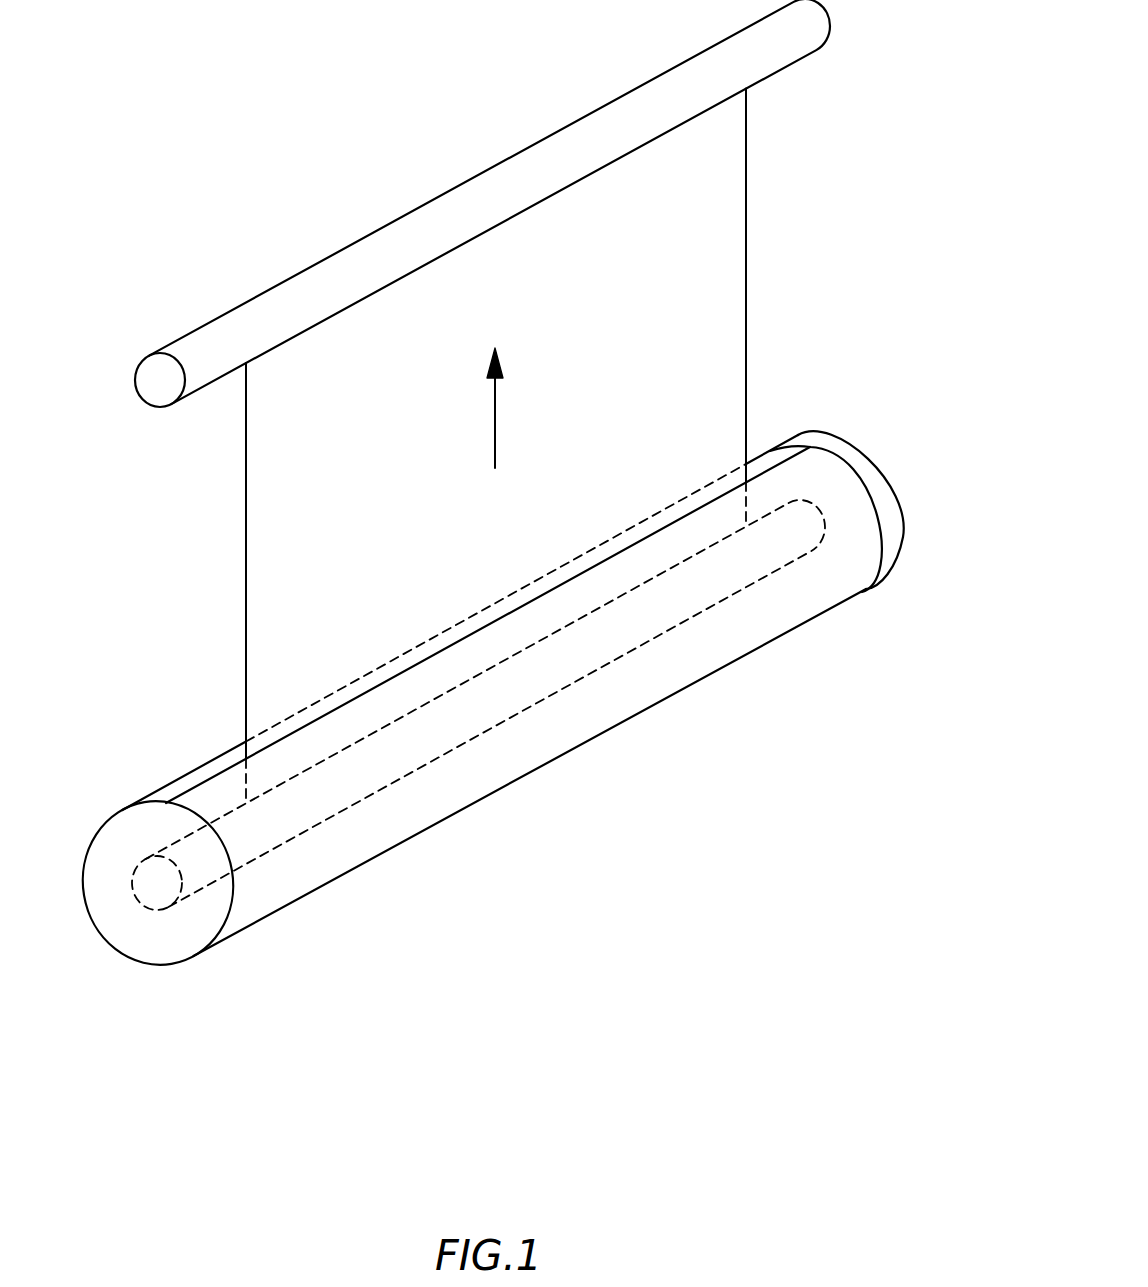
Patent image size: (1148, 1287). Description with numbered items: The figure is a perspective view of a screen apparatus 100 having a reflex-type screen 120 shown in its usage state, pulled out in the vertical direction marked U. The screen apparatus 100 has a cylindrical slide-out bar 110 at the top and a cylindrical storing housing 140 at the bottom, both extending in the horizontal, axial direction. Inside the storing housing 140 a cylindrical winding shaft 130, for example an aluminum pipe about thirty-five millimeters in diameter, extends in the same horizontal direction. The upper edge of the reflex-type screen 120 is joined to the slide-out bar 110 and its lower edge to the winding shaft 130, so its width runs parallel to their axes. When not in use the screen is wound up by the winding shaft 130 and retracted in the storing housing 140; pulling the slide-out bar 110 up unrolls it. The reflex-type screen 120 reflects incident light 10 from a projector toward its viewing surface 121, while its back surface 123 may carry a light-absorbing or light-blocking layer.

The screen apparatus 100 is at (520, 1113).
The slide-out bar 110 is at (481, 188).
The incident light 10 is at (716, 388).
The reflex-type screen 120 is at (893, 196).
The viewing surface 121 is at (716, 299).
The back surface 123 is at (643, 253).
The winding shaft 130 is at (683, 597).
The storing housing 140 is at (618, 727).